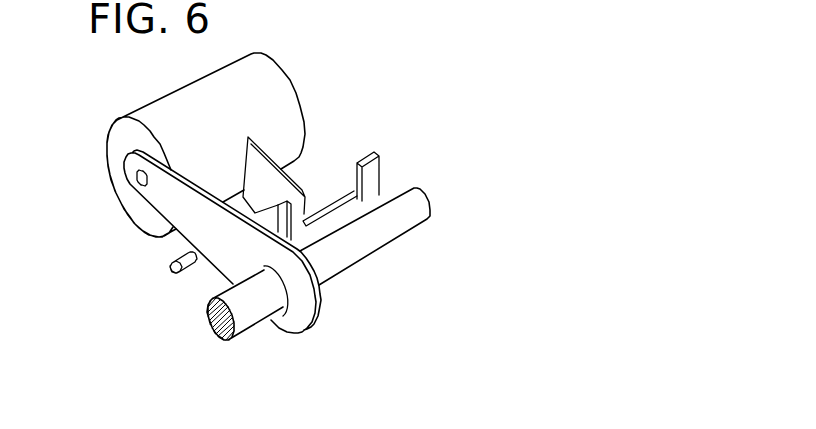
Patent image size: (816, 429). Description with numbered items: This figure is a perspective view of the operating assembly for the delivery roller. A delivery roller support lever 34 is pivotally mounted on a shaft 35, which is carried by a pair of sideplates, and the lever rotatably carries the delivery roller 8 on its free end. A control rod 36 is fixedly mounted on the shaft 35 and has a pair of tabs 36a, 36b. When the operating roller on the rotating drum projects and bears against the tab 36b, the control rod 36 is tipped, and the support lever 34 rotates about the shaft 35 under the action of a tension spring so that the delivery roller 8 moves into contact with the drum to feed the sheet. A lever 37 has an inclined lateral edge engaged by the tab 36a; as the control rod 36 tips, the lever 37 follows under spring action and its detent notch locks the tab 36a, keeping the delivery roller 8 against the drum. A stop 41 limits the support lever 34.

The delivery roller 8 is at (104, 158).
The delivery roller support lever 34 is at (212, 258).
The shaft 35 is at (336, 268).
The control rod 36 is at (343, 219).
The tab 36a is at (309, 215).
The tab 36b is at (377, 179).
The lever 37 is at (282, 163).
The stop 41 is at (170, 266).